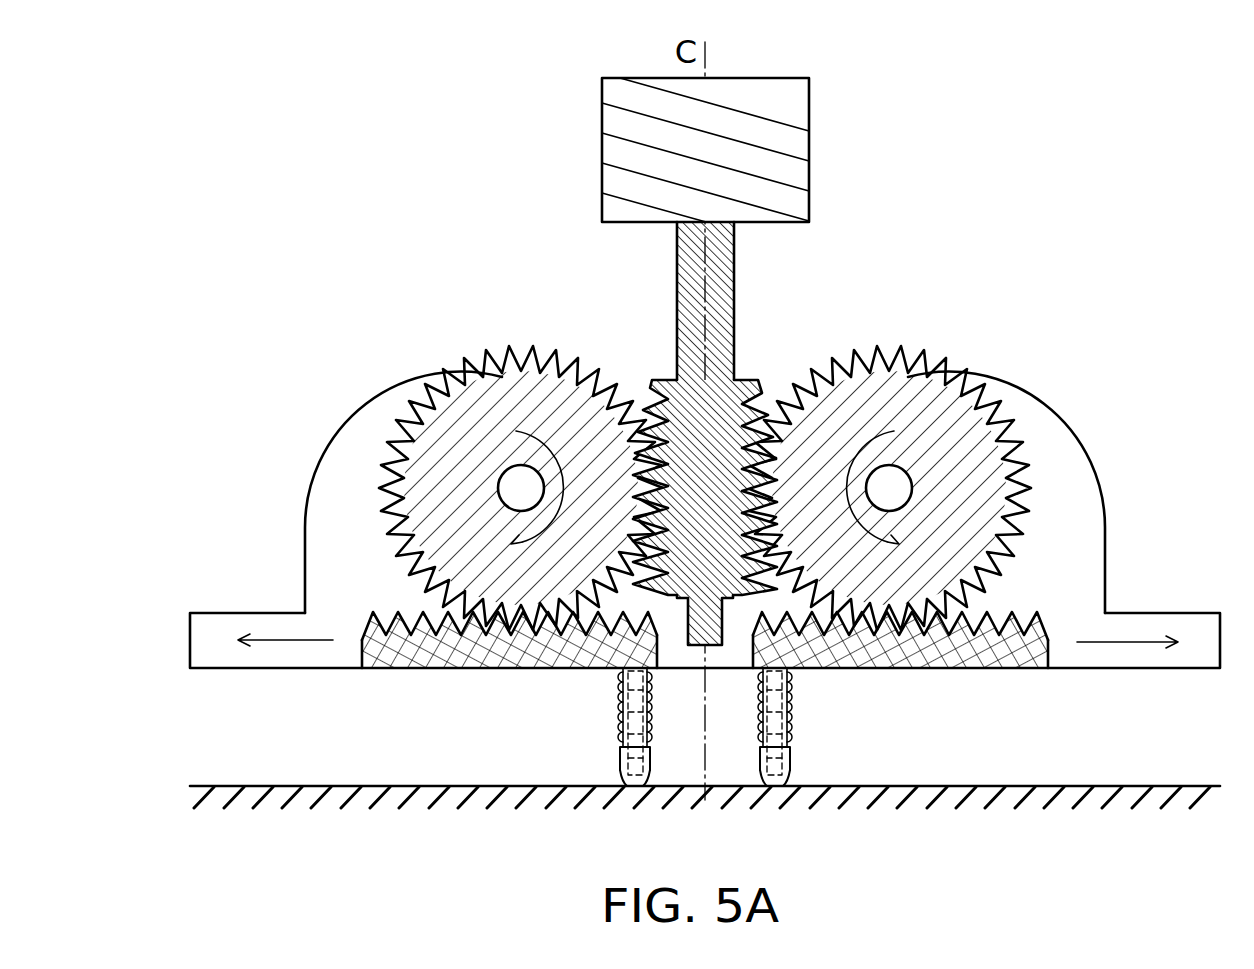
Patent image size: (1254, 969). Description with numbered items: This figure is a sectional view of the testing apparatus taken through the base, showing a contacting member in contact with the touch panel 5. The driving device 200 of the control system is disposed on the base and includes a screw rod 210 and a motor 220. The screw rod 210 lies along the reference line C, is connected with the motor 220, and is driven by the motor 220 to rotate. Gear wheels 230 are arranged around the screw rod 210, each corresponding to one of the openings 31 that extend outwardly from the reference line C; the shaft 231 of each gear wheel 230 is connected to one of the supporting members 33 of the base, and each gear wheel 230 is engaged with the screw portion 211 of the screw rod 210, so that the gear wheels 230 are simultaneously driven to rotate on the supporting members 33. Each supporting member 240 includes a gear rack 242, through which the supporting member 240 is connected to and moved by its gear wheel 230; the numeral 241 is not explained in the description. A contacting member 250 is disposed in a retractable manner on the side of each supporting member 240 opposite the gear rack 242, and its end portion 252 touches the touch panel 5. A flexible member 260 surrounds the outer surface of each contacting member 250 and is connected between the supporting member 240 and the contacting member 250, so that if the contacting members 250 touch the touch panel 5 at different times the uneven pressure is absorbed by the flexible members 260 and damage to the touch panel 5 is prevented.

The driving device 200 is at (882, 167).
The motor 220 is at (802, 206).
The screw rod 210 is at (740, 262).
The screw portion 211 is at (722, 412).
The gear wheel 230 is at (907, 390).
The shaft 231 is at (890, 490).
The supporting member 240 is at (629, 596).
The rack body 241 is at (500, 670).
The gear rack 242 is at (398, 612).
The contacting member 250 is at (790, 762).
The end portion 252 is at (771, 793).
The flexible member 260 is at (792, 712).
The supporting member 33 is at (1095, 498).
The opening 31 is at (1204, 623).
The touch panel 5 is at (1214, 788).